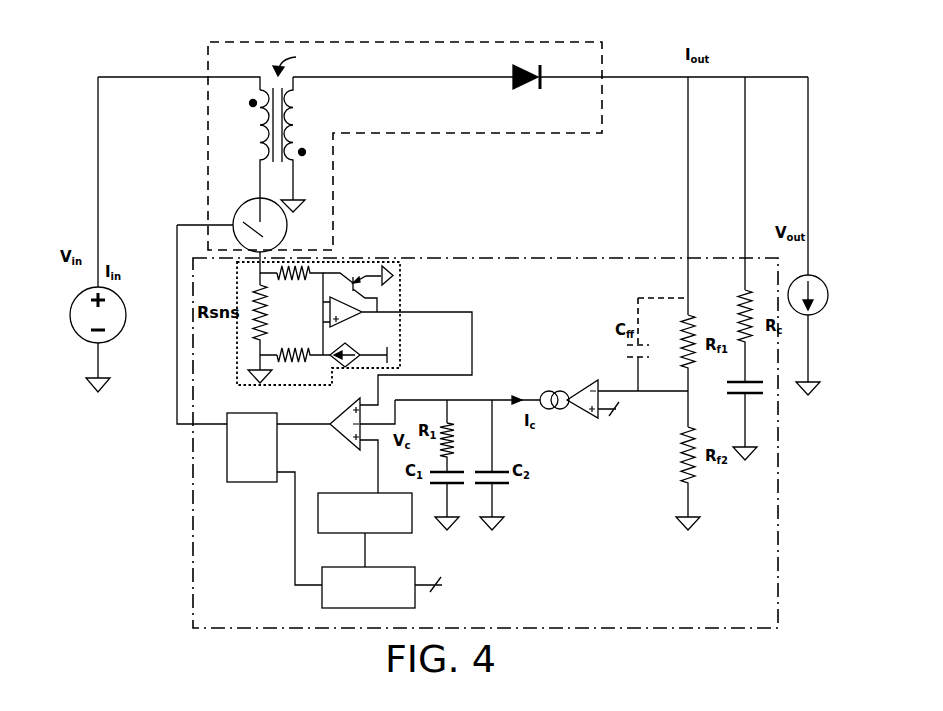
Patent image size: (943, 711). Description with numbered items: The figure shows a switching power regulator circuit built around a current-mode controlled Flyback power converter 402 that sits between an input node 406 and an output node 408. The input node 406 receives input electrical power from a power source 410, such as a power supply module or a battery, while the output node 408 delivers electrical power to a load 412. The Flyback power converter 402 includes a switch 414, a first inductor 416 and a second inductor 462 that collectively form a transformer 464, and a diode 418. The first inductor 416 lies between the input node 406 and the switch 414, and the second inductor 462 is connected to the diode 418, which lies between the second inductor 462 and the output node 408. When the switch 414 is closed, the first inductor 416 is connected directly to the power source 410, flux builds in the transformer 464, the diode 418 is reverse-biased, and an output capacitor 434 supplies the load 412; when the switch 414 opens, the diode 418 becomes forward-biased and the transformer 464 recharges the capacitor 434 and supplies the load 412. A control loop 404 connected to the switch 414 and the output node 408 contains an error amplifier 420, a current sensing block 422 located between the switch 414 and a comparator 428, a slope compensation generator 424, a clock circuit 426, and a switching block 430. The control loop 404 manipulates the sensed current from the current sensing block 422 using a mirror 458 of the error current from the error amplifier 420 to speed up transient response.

The Flyback power converter 402 is at (440, 135).
The control loop 404 is at (545, 630).
The input node 406 is at (157, 75).
The output node 408 is at (763, 75).
The power source 410 is at (70, 318).
The load 412 is at (822, 305).
The switch 414 is at (243, 217).
The first inductor 416 is at (250, 144).
The diode 418 is at (527, 87).
The error amplifier 420 is at (580, 410).
The current sensing block 422 is at (359, 338).
The slope compensation generator 424 is at (383, 533).
The clock circuit 426 is at (360, 608).
The comparator 428 is at (325, 440).
The switching block 430 is at (262, 482).
The output capacitor 434 is at (755, 393).
The mirror 458 is at (335, 366).
The second inductor 462 is at (303, 117).
The transformer 464 is at (301, 62).